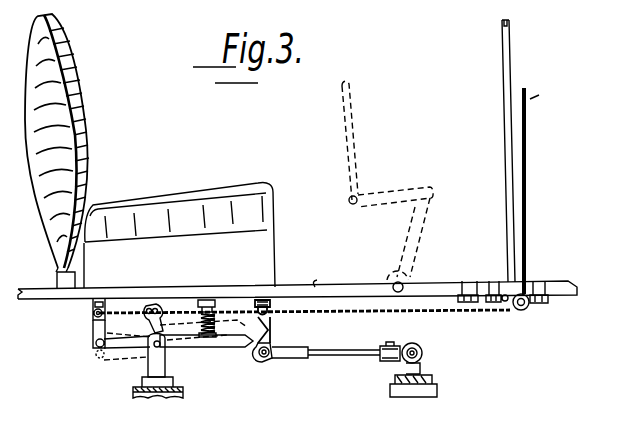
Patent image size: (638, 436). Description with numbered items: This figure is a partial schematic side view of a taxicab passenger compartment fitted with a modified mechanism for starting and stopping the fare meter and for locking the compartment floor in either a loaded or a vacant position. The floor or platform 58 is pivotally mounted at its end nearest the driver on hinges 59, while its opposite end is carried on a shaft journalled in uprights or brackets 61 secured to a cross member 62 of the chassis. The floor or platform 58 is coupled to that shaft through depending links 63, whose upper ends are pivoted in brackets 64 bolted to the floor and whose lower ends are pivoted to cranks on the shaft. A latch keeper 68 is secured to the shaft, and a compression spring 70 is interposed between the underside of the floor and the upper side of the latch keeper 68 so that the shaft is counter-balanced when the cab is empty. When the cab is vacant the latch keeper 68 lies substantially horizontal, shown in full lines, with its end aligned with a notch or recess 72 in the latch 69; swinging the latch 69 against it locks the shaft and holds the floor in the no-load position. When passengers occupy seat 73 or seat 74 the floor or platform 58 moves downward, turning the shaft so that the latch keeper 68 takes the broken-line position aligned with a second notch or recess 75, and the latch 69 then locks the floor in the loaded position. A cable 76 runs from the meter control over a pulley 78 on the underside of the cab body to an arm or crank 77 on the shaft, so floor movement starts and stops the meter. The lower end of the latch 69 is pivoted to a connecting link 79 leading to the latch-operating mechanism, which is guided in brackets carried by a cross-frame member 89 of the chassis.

The floor or platform 58 is at (323, 281).
The hinges 59 is at (531, 304).
The uprights or brackets 61 is at (150, 358).
The cross member 62 is at (184, 393).
The depending links 63 is at (91, 332).
The brackets 64 is at (90, 313).
The latch keeper 68 is at (222, 348).
The latch 69 is at (326, 344).
The compression spring 70 is at (213, 322).
The notch or recess 72 is at (272, 360).
The seat 73 is at (215, 184).
The seat 74 is at (402, 160).
The notch or recess 75 is at (274, 327).
The cable 76 is at (517, 220).
The arm or crank 77 is at (305, 318).
The pulley 78 is at (519, 311).
The connecting link 79 is at (390, 347).
The cross-frame member 89 is at (438, 388).